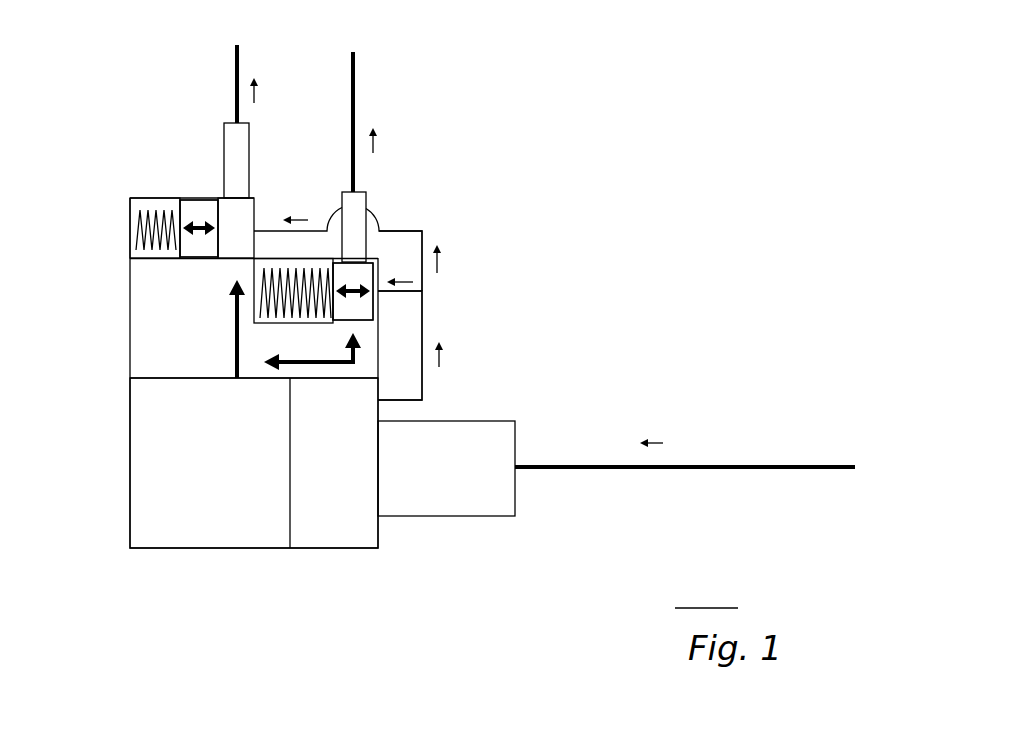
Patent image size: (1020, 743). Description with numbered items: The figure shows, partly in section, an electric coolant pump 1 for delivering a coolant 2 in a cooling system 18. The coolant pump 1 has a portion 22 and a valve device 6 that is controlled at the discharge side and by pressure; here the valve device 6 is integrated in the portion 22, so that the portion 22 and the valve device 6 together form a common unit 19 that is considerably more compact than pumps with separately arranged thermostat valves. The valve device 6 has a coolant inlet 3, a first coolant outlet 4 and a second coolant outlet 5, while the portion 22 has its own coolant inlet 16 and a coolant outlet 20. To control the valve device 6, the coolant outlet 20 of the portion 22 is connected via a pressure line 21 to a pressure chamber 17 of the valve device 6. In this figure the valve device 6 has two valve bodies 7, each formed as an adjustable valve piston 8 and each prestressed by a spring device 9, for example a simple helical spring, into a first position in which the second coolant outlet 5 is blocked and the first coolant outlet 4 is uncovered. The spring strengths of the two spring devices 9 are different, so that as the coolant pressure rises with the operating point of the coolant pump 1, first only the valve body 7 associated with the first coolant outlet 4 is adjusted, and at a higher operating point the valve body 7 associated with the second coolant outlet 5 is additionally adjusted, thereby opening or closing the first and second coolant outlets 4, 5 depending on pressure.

The electric coolant pump 1 is at (557, 227).
The coolant 2 is at (660, 442).
The coolant inlet 3 is at (235, 268).
The first coolant outlet 4 is at (362, 190).
The second coolant outlet 5 is at (235, 118).
The valve device 6 is at (315, 192).
The valve body 7 is at (197, 208).
The valve piston 8 is at (362, 305).
The spring device 9 is at (142, 235).
The coolant inlet 16 is at (517, 463).
The pressure chamber 17 is at (233, 220).
The cooling system 18 is at (767, 463).
The common unit 19 is at (449, 236).
The coolant outlet 20 is at (382, 382).
The pressure line 21 is at (395, 230).
The portion 22 is at (170, 547).